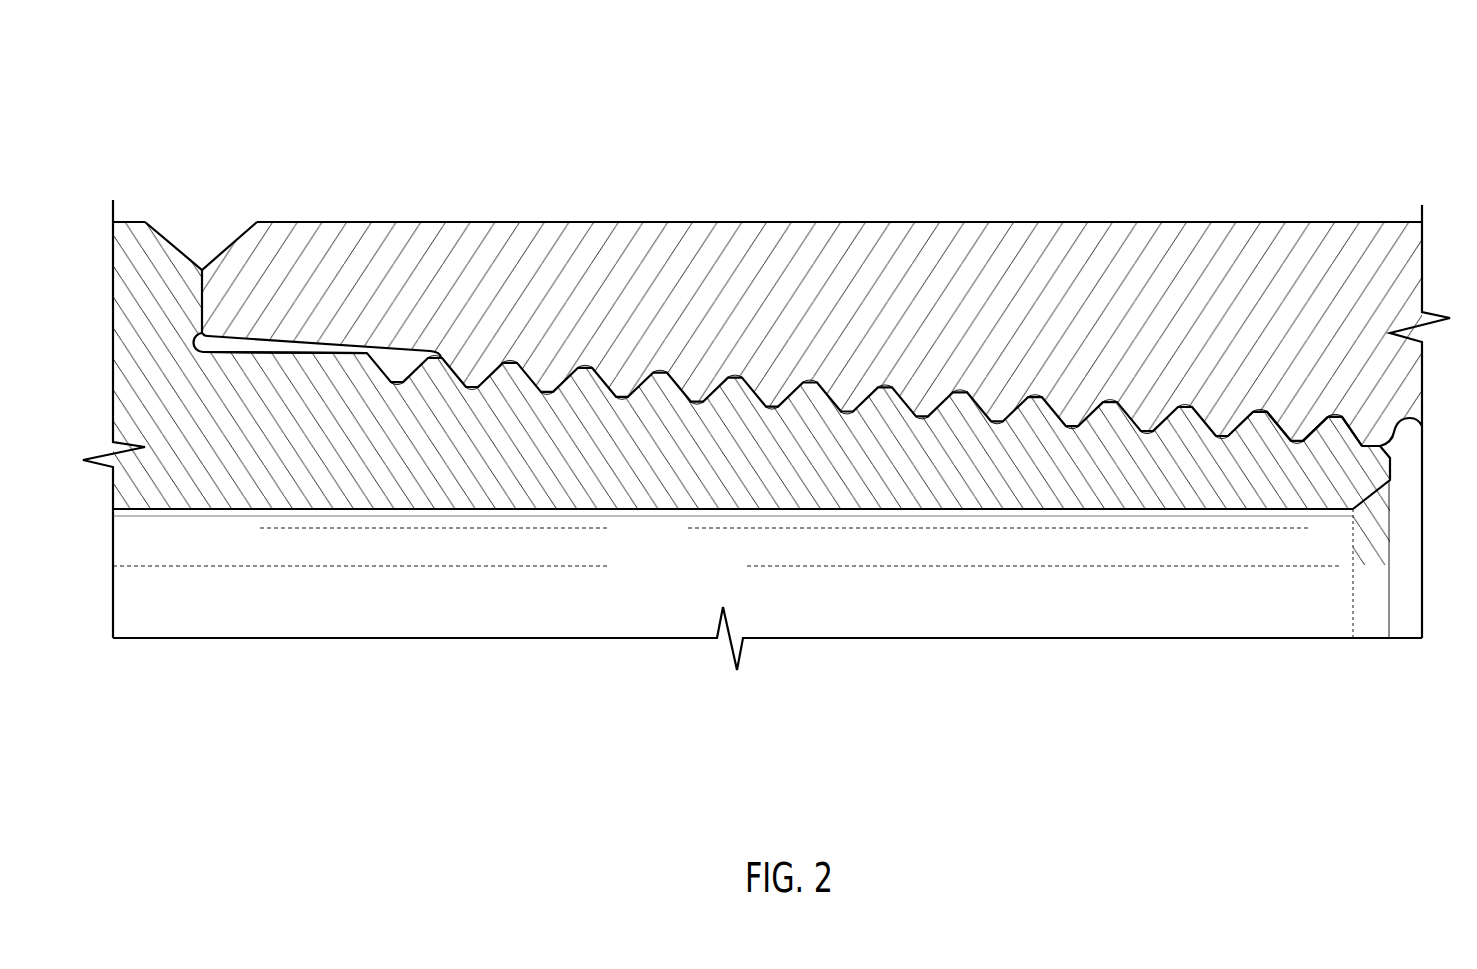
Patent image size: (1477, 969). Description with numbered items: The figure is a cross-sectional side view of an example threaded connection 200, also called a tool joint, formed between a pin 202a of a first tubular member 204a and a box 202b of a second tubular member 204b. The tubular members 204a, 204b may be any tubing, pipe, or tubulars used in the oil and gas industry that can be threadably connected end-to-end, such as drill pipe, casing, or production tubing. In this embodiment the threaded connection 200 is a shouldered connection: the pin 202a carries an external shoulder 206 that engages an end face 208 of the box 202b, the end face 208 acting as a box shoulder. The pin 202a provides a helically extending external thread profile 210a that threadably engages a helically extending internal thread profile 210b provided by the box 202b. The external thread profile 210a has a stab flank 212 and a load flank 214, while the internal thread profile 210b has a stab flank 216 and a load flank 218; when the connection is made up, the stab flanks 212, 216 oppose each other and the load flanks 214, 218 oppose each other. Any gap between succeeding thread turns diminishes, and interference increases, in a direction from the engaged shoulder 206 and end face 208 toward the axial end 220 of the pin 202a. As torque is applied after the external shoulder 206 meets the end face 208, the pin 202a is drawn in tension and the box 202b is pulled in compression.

The threaded connection 200 is at (206, 70).
The pin 202a is at (970, 487).
The box 202b is at (1003, 312).
The first tubular member 204a is at (593, 509).
The second tubular member 204b is at (593, 222).
The external shoulder 206 is at (203, 303).
The end face 208 is at (200, 288).
The external thread profile 210a is at (712, 385).
The internal thread profile 210b is at (825, 397).
The stab flank 212 is at (1278, 416).
The load flank 214 is at (1313, 427).
The stab flank 216 is at (1337, 416).
The load flank 218 is at (1392, 433).
The axial end 220 is at (1390, 466).